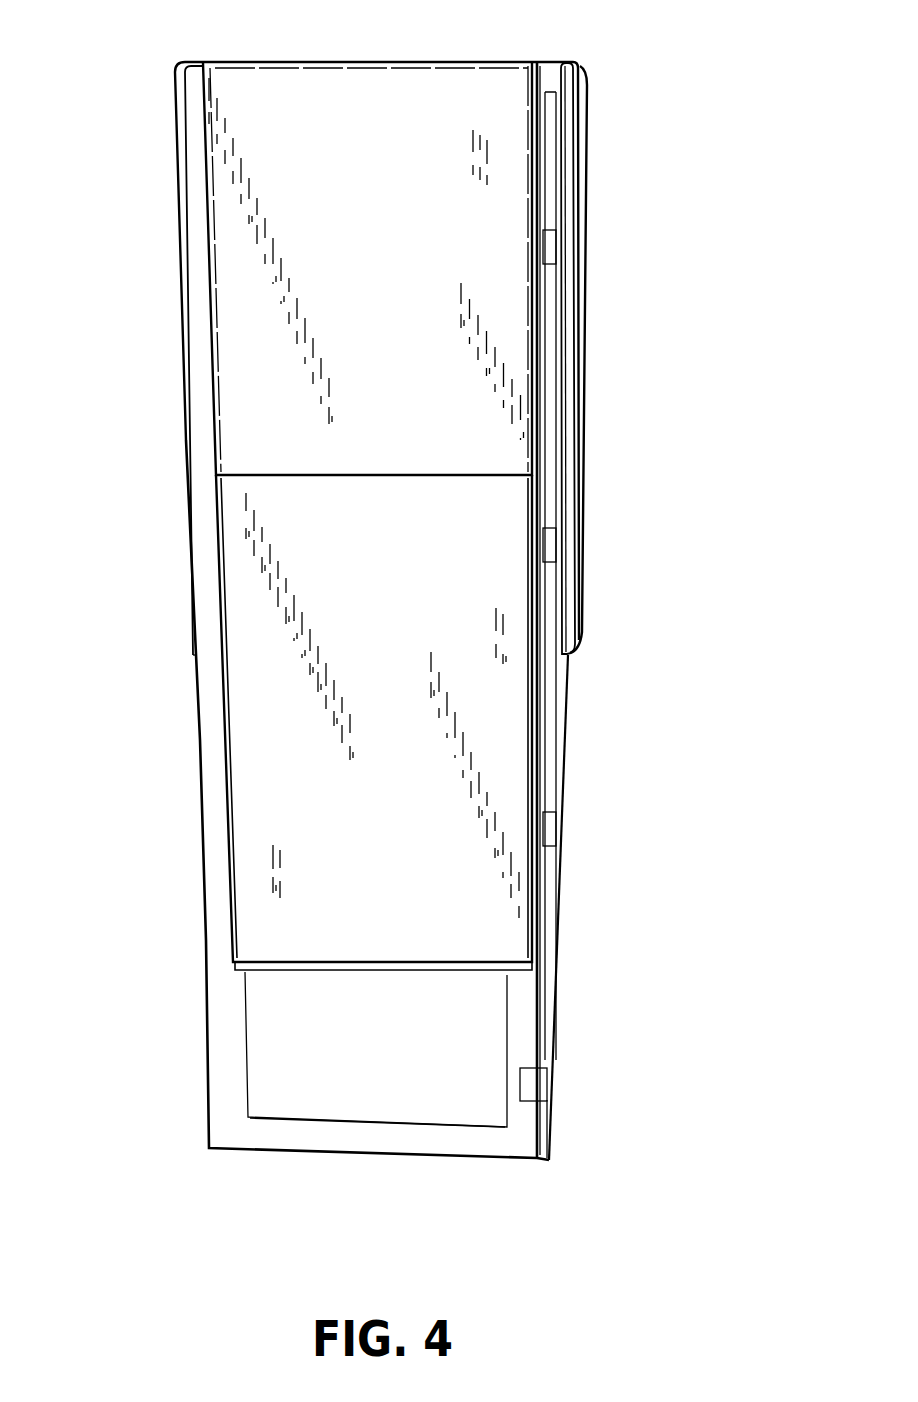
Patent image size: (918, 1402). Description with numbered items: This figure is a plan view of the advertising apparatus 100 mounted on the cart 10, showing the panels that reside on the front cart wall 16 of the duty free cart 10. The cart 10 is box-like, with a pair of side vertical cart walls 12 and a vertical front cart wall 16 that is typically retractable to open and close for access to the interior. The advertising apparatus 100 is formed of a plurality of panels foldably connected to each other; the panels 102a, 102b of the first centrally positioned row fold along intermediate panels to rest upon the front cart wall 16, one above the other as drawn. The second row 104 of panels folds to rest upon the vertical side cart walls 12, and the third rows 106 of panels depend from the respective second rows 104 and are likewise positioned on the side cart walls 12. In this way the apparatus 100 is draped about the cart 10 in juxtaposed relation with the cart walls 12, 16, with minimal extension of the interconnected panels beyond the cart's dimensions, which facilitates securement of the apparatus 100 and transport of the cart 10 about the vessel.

The advertising apparatus 100 is at (412, 634).
The panel of first centrally positioned row 102a is at (411, 731).
The panel of first centrally positioned row 102b is at (398, 259).
The second row of panels 104 is at (176, 148).
The third row of panels 106 is at (578, 562).
The side vertical cart wall 12 is at (560, 823).
The cart 10 is at (272, 1057).
The vertical front cart wall 16 is at (428, 1092).